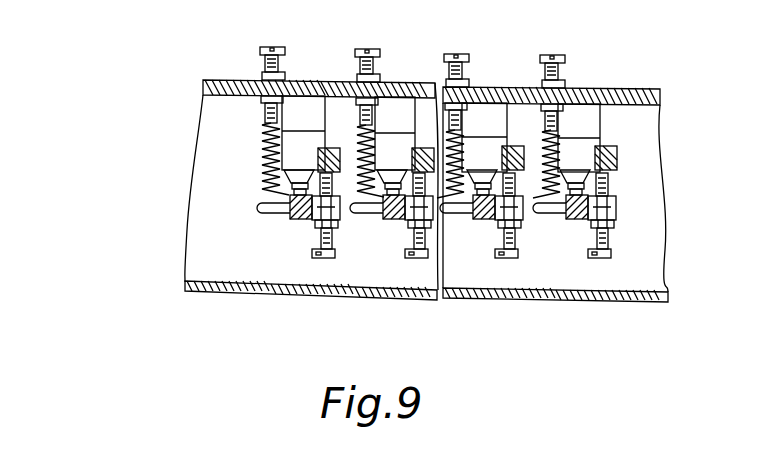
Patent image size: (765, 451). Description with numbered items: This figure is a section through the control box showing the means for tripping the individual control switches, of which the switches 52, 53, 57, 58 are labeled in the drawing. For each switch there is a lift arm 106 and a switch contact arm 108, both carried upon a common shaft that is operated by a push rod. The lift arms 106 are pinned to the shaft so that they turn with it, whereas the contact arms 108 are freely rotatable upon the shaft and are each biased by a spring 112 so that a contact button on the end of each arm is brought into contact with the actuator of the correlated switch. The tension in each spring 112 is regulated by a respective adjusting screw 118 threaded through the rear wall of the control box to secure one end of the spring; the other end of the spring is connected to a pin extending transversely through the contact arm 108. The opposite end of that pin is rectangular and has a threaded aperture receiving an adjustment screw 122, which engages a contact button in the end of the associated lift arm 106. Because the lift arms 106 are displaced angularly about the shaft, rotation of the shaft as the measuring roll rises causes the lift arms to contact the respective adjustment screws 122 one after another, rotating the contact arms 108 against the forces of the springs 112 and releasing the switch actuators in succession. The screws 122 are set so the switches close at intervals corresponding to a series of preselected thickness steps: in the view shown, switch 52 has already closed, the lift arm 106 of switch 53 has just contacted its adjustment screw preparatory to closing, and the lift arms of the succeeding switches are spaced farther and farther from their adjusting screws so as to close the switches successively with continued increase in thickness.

The adjusting screw 118 is at (366, 50).
The spring 112 is at (262, 146).
The lift arm 106 is at (328, 148).
The switch contact arm 108 is at (292, 220).
The adjustment screw 122 is at (312, 253).
The first valve 52 is at (325, 268).
The second valve 53 is at (421, 275).
The third valve 57 is at (530, 278).
The fourth valve 58 is at (622, 277).